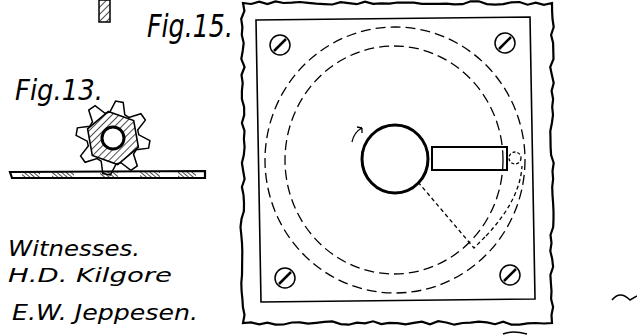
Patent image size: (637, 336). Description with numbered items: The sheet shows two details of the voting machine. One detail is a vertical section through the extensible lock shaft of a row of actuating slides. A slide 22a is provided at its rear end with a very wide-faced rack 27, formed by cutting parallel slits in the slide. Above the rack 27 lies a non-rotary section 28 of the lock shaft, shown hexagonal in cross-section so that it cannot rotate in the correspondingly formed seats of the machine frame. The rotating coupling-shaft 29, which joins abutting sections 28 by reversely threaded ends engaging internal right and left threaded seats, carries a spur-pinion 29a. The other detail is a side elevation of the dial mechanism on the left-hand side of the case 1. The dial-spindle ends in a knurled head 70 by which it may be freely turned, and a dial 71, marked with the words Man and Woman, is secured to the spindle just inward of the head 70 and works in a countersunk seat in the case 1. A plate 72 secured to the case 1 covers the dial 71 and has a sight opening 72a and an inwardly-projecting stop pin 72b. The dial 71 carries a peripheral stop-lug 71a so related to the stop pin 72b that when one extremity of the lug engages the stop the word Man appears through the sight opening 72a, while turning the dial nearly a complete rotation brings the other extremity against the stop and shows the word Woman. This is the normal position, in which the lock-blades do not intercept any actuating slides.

In FIG. 15, the case 1 is at (557, 69).
In FIG. 13, the actuating slide 22a is at (184, 183).
In FIG. 13, the rack 27 is at (30, 172).
In FIG. 13, the non-rotary section 28 is at (122, 122).
In FIG. 13, the rotating coupling-shaft 29 is at (141, 156).
In FIG. 13, the spur-pinion 29a is at (147, 119).
In FIG. 15, the knurled head 70 is at (407, 130).
In FIG. 15, the dial 71 is at (314, 83).
In FIG. 15, the stop-lug 71a is at (512, 213).
In FIG. 15, the plate 72 is at (530, 116).
In FIG. 15, the sight opening 72a is at (478, 141).
In FIG. 15, the stop pin 72b is at (524, 158).